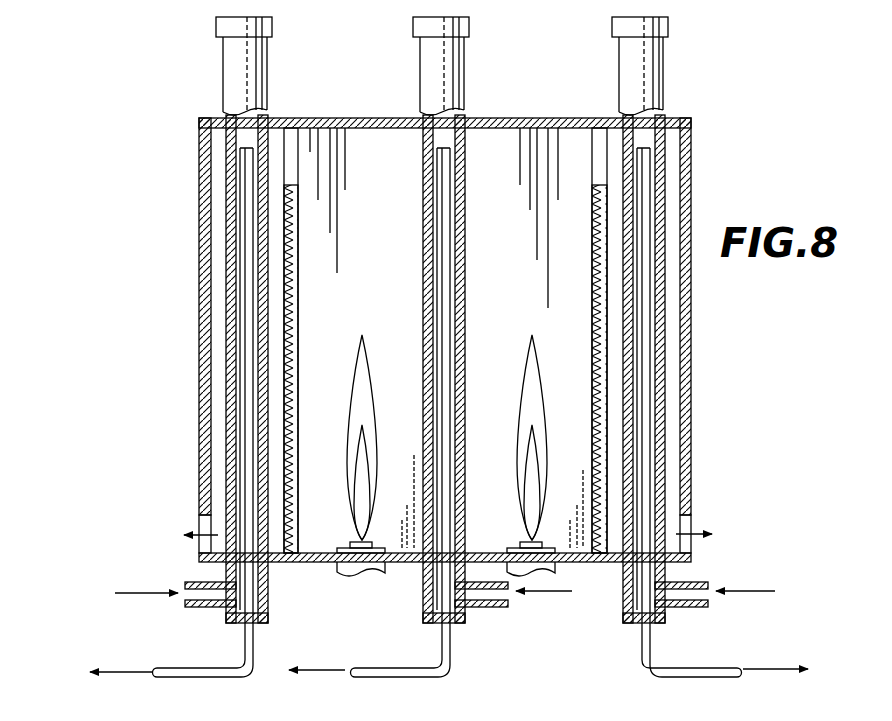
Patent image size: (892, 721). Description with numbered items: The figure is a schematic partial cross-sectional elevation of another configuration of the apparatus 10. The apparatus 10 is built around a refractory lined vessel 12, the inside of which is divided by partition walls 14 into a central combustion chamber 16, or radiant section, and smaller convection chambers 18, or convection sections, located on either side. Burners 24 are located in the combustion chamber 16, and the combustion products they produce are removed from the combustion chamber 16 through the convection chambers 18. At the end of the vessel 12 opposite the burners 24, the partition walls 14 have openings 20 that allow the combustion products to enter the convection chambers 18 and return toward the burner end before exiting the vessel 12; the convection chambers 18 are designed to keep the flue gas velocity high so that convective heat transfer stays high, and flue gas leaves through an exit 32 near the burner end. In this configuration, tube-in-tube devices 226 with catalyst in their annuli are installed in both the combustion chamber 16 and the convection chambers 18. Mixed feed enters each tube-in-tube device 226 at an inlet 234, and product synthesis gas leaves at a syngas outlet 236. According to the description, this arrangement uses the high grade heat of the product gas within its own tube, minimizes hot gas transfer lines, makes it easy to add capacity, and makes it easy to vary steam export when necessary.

The apparatus 10 is at (146, 104).
The refractory lined vessel 12 is at (449, 330).
The partition wall 14 is at (283, 423).
The combustion chamber 16 is at (570, 388).
The convection chamber 18 is at (217, 335).
The opening 20 is at (295, 163).
The burner 24 is at (368, 573).
The exhaust outlet 32 is at (205, 525).
The tube-in-tube device 226 is at (225, 223).
The inlet 234 is at (205, 582).
The syngas outlet 236 is at (195, 667).